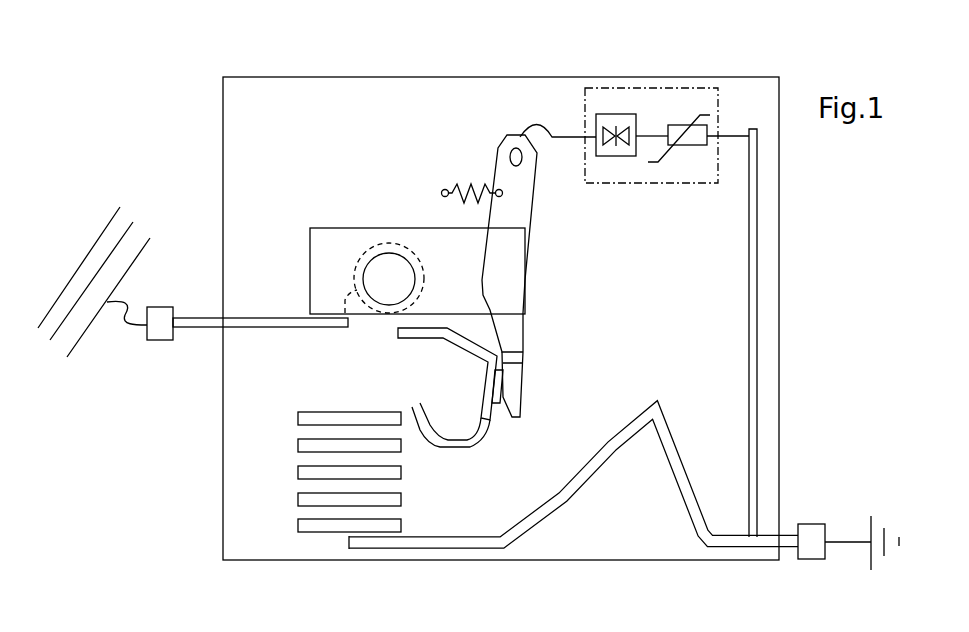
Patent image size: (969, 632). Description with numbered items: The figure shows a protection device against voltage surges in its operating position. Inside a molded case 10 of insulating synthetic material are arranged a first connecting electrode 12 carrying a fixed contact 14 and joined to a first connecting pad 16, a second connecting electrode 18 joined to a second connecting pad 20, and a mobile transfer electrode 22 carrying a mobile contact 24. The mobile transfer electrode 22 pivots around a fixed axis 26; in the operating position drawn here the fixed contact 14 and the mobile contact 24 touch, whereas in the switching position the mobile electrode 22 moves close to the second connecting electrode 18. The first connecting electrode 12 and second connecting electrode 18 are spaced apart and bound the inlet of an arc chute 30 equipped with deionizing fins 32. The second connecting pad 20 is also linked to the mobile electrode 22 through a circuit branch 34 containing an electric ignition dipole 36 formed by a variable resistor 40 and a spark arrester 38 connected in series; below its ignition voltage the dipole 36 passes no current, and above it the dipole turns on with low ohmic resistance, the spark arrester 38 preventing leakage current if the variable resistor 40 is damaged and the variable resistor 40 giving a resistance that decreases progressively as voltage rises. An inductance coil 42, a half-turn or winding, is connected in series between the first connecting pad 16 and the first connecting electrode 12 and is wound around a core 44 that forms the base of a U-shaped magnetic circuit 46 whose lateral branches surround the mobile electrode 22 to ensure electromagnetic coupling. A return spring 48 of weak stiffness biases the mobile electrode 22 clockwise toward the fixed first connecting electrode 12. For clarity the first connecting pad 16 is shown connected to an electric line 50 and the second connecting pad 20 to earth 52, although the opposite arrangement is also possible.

The molded case 10 is at (265, 78).
The first connecting electrode 12 is at (483, 417).
The fixed contact 14 is at (500, 415).
The first connecting pad 16 is at (162, 342).
The second connecting electrode 18 is at (545, 515).
The second connecting pad 20 is at (817, 524).
The mobile transfer electrode 22 is at (512, 328).
The mobile contact 24 is at (515, 390).
The fixed axis 26 is at (516, 135).
The arc chute 30 is at (436, 491).
The deionizing fins 32 is at (315, 527).
The circuit branch 34 is at (752, 276).
The electric ignition dipole 36 is at (665, 87).
The spark arrester 38 is at (612, 113).
The variable resistor 40 is at (703, 112).
The inductance coil 42 is at (363, 257).
The core 44 is at (387, 272).
The U-shaped magnetic circuit 46 is at (426, 240).
The return spring 48 is at (468, 185).
The electric line 50 is at (150, 238).
The earth 52 is at (810, 560).